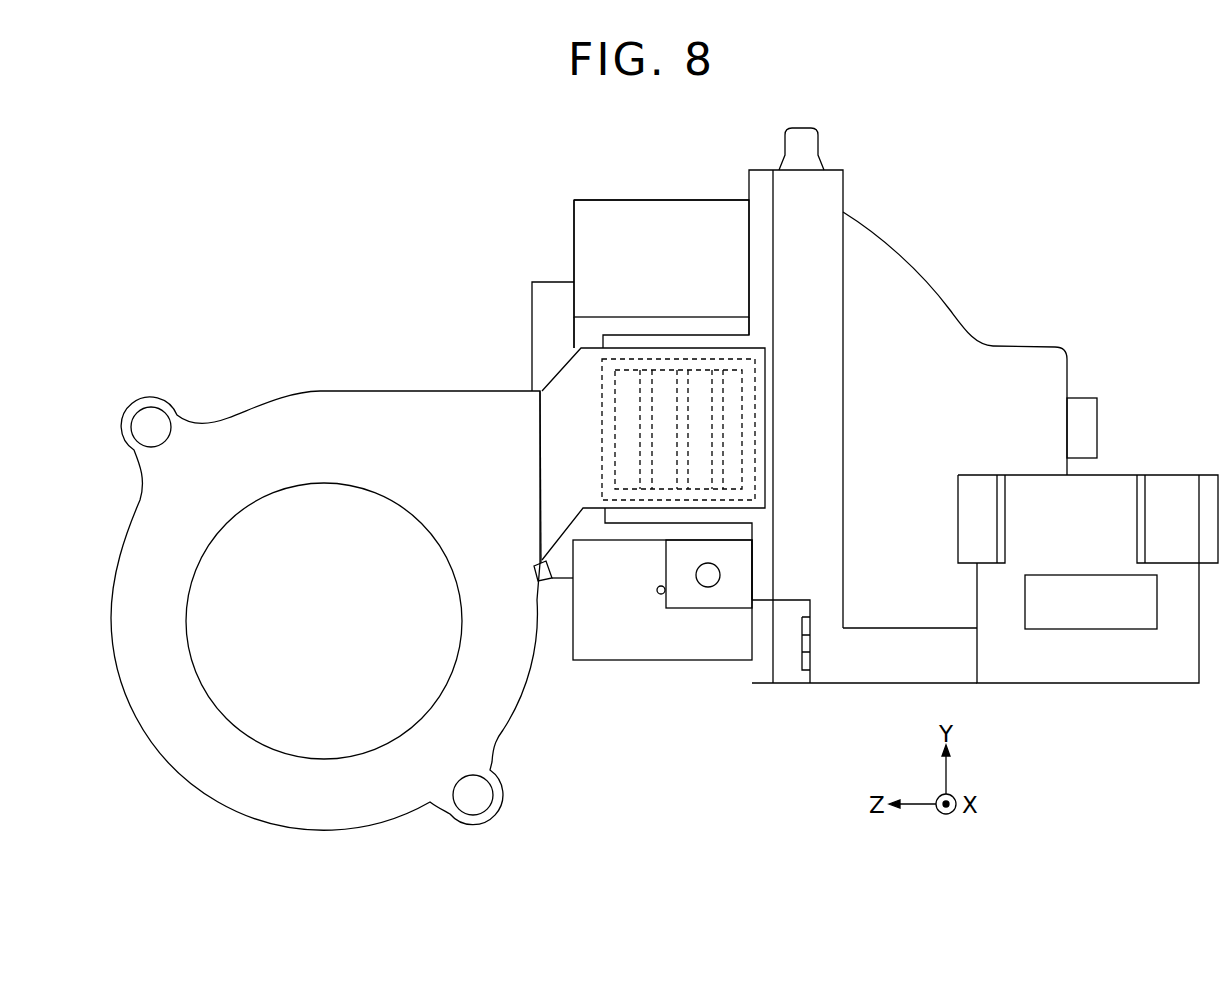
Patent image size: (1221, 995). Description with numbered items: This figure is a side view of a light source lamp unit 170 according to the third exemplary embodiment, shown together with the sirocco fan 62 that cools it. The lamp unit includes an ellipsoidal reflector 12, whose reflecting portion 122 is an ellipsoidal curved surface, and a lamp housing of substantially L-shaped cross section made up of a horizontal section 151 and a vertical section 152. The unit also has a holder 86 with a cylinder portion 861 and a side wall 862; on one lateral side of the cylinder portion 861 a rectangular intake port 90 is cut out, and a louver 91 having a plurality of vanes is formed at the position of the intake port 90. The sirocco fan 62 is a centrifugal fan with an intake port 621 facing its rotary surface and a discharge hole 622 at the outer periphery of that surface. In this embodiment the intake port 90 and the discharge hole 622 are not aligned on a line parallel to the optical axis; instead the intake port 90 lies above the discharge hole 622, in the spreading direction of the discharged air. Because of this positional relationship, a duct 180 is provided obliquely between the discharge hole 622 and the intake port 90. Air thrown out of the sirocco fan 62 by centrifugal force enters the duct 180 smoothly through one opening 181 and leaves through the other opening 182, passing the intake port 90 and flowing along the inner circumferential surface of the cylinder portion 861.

The ellipsoidal reflector 12 is at (942, 292).
The sirocco fan 62 is at (223, 432).
The intake port 621 is at (258, 740).
The discharge hole 622 is at (545, 581).
The holder 86 is at (592, 200).
The cylinder portion 861 is at (665, 210).
The duct side wall 862 is at (572, 250).
The intake port 90 is at (598, 517).
The louver 91 is at (735, 463).
The reflecting portion 122 is at (898, 238).
The horizontal section 151 is at (948, 675).
The vertical section 152 is at (832, 177).
The light source lamp unit 170 is at (935, 170).
The duct 180 is at (572, 378).
The one opening 181 is at (541, 477).
The other opening 182 is at (663, 360).